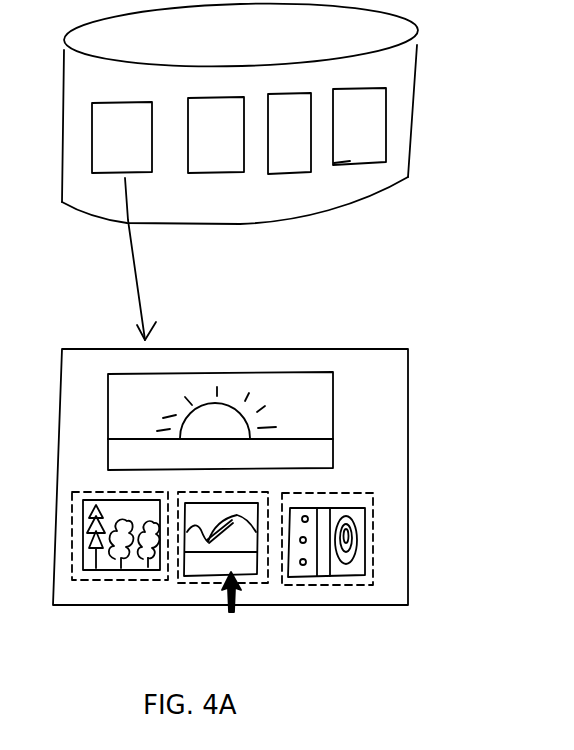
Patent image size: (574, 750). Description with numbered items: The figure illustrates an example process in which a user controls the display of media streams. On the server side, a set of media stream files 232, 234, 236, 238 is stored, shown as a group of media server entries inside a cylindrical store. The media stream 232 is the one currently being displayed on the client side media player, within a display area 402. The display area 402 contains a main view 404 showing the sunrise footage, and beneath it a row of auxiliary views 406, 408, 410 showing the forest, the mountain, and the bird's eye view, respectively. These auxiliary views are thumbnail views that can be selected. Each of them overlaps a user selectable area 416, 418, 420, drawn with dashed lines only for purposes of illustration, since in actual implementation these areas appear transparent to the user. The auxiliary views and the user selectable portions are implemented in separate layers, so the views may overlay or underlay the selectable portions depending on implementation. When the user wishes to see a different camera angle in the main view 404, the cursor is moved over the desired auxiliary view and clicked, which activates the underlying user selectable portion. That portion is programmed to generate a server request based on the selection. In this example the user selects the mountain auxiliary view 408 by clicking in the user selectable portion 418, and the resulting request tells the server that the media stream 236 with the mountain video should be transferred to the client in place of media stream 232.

The media stream file 232 is at (137, 174).
The media stream file 234 is at (208, 174).
The media stream file 236 is at (283, 175).
The media stream file 238 is at (345, 165).
The display area 402 is at (410, 385).
The main view 404 is at (336, 415).
The auxiliary view 406 is at (105, 571).
The auxiliary view 408 is at (200, 578).
The auxiliary view 410 is at (313, 578).
The user selectable area 416 is at (79, 582).
The user selectable area 418 is at (180, 584).
The user selectable area 420 is at (288, 586).